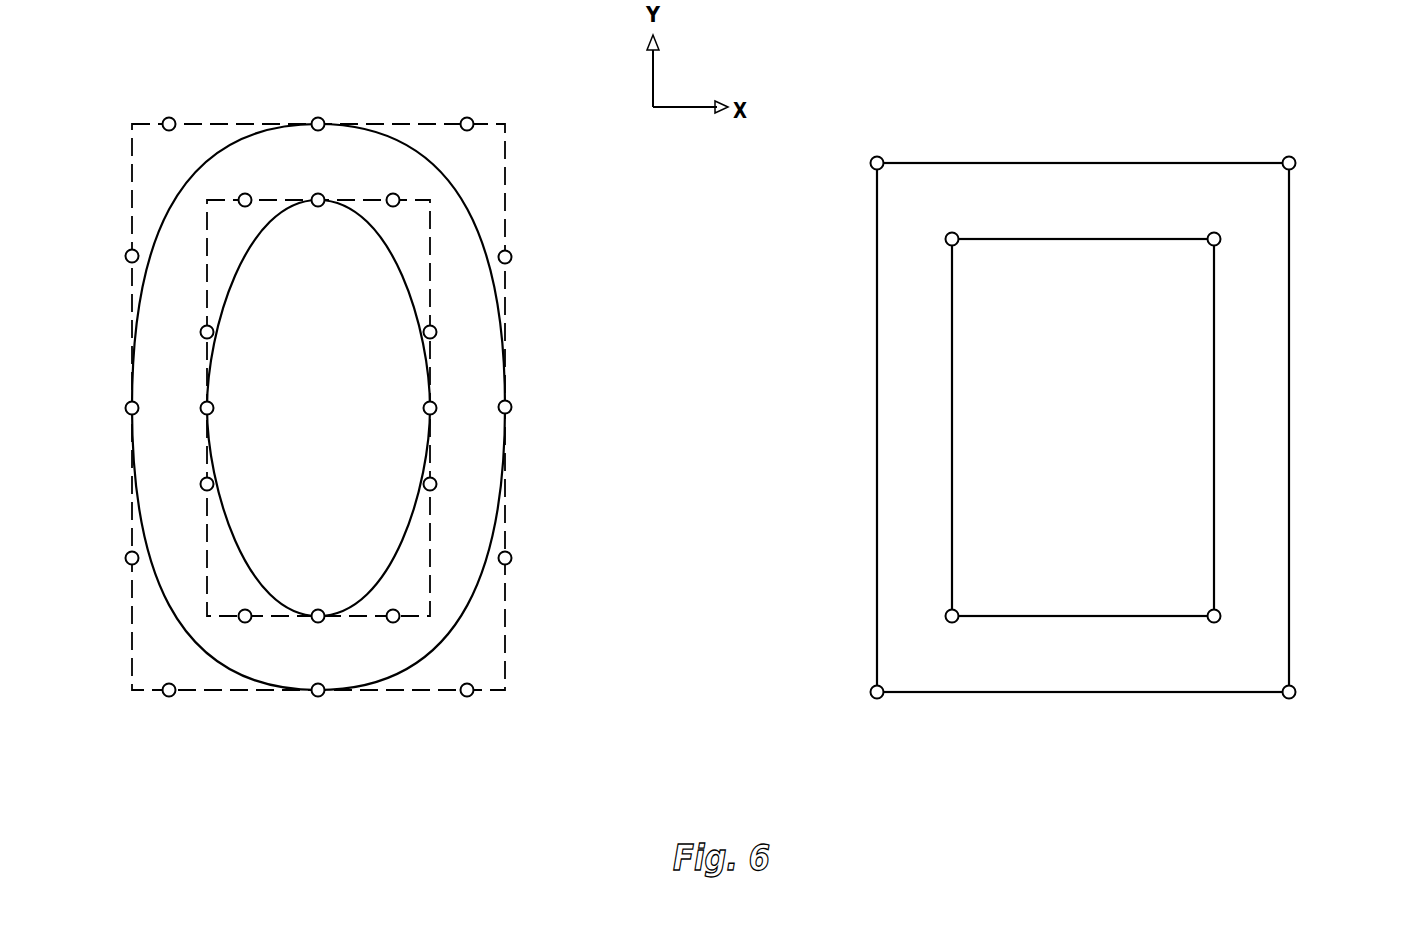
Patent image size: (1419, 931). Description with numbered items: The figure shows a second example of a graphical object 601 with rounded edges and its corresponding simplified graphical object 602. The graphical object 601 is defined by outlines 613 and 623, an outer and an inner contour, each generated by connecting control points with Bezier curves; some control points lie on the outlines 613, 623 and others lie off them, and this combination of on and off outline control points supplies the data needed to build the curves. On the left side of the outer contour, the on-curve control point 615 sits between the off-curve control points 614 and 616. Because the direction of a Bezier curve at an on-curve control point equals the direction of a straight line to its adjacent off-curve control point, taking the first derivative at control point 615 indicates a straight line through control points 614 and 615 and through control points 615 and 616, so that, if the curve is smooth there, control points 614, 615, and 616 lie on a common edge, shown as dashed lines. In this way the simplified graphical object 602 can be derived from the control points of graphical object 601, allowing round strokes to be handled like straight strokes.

The graphical object 601 is at (323, 482).
The simplified graphical object 602 is at (1158, 763).
The outline 613 is at (470, 218).
The outline 623 is at (319, 408).
The control point 614 is at (125, 559).
The control point 615 is at (125, 409).
The control point 616 is at (125, 257).